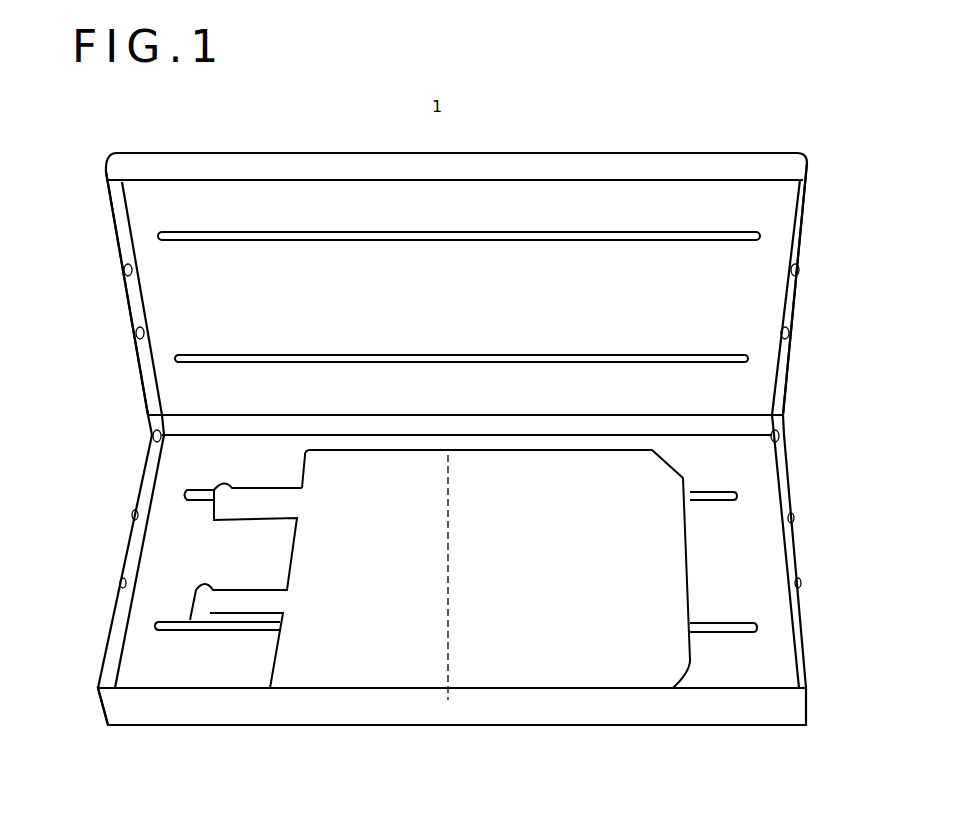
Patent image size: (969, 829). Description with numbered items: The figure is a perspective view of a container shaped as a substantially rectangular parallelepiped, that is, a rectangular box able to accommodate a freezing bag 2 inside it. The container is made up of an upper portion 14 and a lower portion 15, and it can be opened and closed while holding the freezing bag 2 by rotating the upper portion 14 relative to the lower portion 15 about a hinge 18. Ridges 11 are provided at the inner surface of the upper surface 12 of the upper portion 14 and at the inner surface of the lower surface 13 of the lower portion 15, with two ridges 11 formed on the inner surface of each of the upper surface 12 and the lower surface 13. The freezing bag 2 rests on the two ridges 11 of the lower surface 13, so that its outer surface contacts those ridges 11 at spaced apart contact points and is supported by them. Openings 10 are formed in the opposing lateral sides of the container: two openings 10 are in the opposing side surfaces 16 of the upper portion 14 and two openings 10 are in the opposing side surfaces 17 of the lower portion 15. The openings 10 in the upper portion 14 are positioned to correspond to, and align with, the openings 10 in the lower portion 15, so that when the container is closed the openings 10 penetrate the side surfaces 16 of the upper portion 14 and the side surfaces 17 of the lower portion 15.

The freezing bag 2 is at (380, 665).
The openings 10 is at (107, 268).
The ridges 11 is at (275, 240).
The upper surface 12 is at (600, 152).
The lower surface 13 is at (627, 727).
The upper portion 14 is at (757, 148).
The lower portion 15 is at (152, 708).
The side surfaces of the upper portion 16 is at (103, 192).
The side surfaces of the lower portion 17 is at (103, 652).
The hinge 18 is at (140, 428).